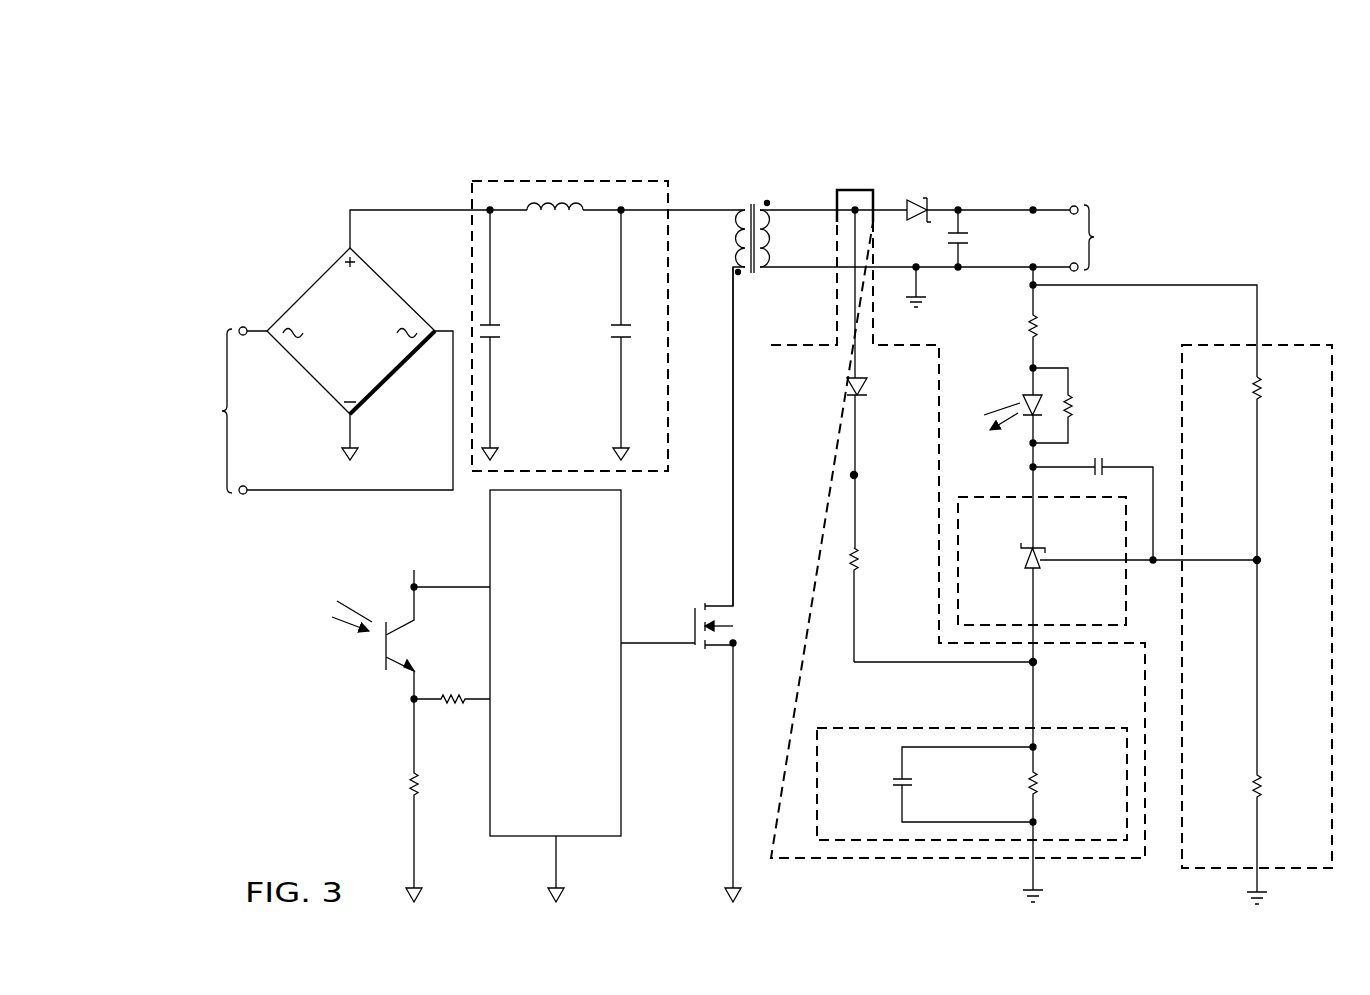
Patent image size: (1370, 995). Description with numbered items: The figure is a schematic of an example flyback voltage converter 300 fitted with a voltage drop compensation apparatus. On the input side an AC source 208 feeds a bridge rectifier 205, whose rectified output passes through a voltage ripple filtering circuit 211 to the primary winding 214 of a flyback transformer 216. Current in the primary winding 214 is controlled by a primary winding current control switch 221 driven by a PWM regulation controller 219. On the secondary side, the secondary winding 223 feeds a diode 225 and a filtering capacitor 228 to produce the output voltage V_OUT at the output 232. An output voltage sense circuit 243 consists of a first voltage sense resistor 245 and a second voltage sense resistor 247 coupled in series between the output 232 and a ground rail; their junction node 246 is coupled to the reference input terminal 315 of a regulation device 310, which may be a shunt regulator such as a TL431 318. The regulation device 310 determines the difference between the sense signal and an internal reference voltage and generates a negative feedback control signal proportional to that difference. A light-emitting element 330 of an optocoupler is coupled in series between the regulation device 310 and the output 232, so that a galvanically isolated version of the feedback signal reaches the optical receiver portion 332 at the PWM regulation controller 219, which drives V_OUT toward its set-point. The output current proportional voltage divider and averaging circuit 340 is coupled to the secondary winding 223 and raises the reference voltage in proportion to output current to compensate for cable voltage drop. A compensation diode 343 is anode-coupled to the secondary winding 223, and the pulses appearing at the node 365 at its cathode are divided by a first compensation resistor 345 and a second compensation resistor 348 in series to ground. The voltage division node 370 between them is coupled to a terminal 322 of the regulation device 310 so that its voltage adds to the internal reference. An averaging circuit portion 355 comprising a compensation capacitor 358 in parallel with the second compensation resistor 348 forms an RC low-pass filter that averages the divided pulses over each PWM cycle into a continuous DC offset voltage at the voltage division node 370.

The flyback voltage converter 300 is at (1185, 178).
The bridge rectifier 205 is at (307, 288).
The AC input source 208 is at (316, 410).
The voltage ripple filtering circuit 211 is at (524, 178).
The primary winding 214 is at (740, 238).
The flyback transformer 216 is at (873, 385).
The secondary winding 223 is at (763, 237).
The PWM regulation controller 219 is at (623, 568).
The primary winding current control switch 221 is at (694, 622).
The diode 225 is at (923, 200).
The filtering capacitor 228 is at (947, 237).
The output 232 is at (1115, 237).
The output voltage sense circuit 243 is at (1303, 343).
The first voltage sense resistor 245 is at (1253, 385).
The junction node 246 is at (1260, 560).
The second voltage sense resistor 247 is at (1252, 793).
The regulation device 310 is at (986, 492).
The reference input terminal 315 is at (1068, 558).
The shunt regulator TL431 318 is at (1020, 548).
The regulator anode 322 is at (1038, 567).
The light-emitting element 330 is at (1029, 395).
The optical receiver portion 332 is at (385, 647).
The output current proportional voltage divider and averaging circuit 340 is at (782, 342).
The compensation diode 343 is at (847, 387).
The first compensation resistor 345 is at (850, 565).
The second compensation resistor 348 is at (1030, 790).
The averaging circuit portion 355 is at (893, 726).
The compensation capacitor 358 is at (912, 785).
The node 365 is at (851, 477).
The voltage division node 370 is at (1028, 668).